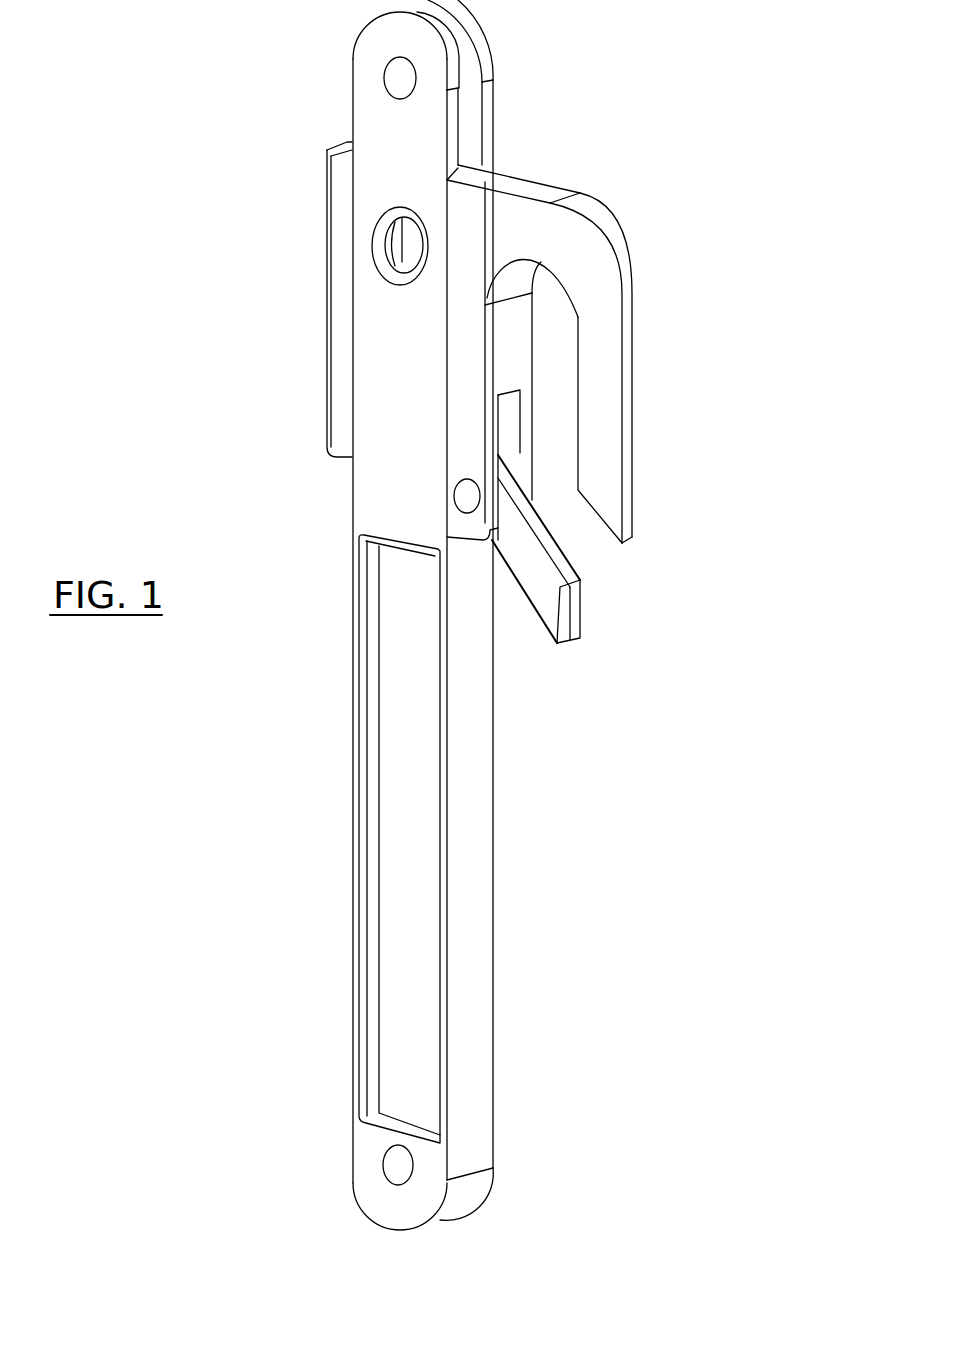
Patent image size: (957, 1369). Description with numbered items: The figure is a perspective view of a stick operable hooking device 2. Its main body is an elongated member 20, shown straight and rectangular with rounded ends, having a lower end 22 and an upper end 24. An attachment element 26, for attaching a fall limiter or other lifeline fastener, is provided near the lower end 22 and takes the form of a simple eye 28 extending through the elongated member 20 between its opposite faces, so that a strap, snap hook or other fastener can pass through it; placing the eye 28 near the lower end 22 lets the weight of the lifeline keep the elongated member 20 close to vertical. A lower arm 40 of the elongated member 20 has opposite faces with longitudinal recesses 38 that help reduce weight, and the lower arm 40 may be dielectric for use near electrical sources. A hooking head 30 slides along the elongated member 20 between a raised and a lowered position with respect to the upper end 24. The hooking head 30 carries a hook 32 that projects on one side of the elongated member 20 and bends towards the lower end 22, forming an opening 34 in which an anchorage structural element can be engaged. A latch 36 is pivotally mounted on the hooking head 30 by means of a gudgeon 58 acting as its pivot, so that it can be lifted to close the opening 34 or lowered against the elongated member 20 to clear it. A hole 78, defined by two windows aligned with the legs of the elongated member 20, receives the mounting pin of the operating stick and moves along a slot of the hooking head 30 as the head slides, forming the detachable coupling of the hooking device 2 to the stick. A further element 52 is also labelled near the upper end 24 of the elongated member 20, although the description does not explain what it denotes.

The hooking device 2 is at (726, 760).
The elongated member 20 is at (490, 907).
The lower end 22 is at (501, 1204).
The upper end 24 is at (526, 18).
The attachment element 26 is at (380, 1160).
The eye 28 is at (395, 1172).
The hooking head 30 is at (562, 172).
The hook 32 is at (615, 238).
The opening 34 is at (608, 565).
The latch 36 is at (552, 627).
The longitudinal recesses 38 is at (397, 955).
The lower arm 40 is at (478, 790).
The mounting hole 52 is at (388, 77).
The gudgeon 58 is at (468, 503).
The hole 78 is at (377, 248).